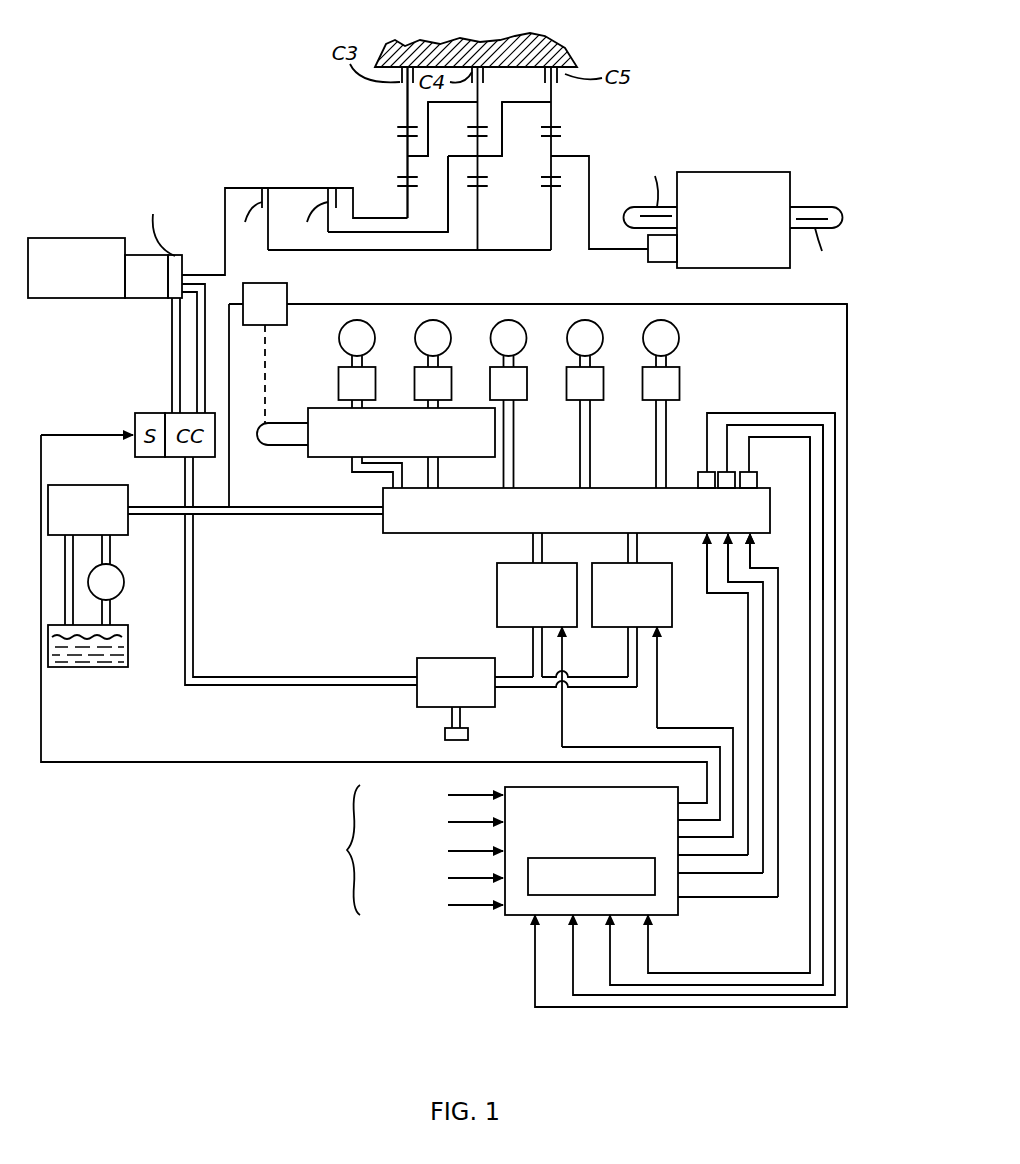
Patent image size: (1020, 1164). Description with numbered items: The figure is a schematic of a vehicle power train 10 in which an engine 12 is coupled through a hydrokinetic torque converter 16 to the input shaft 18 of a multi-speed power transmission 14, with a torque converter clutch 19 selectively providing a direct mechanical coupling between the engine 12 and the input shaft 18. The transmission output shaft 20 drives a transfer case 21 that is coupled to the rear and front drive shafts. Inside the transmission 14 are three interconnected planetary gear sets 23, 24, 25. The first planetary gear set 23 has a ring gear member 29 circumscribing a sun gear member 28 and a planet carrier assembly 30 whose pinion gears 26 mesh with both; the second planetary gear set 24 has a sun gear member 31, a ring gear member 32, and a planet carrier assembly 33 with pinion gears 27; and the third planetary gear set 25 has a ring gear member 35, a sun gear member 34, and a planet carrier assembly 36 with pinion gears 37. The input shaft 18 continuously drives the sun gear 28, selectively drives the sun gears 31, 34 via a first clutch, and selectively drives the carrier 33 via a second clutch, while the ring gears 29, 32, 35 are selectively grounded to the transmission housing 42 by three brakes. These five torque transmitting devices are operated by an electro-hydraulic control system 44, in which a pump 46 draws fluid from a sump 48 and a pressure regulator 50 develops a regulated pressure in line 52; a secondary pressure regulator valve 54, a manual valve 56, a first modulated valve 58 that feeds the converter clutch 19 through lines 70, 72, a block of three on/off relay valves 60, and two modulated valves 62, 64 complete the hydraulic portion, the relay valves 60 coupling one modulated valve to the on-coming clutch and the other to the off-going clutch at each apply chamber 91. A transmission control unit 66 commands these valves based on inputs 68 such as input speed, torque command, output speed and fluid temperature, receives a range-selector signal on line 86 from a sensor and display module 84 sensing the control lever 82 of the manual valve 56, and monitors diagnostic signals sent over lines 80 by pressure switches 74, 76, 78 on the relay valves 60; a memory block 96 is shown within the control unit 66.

The vehicle power train 10 is at (236, 127).
The engine 12 is at (83, 298).
The multi-speed power transmission 14 is at (323, 127).
The hydrokinetic torque converter 16 is at (143, 300).
The transmission input shaft 18 is at (246, 188).
The torque converter clutch 19 is at (186, 272).
The transmission output shaft 20 is at (604, 249).
The transfer case 21 is at (728, 172).
The first planetary gear set 23 is at (415, 162).
The second planetary gear set 24 is at (492, 162).
The third planetary gear set 25 is at (571, 143).
The pinion gears 26 is at (398, 140).
The pinion gears 27 is at (467, 179).
The sun gear member 28 is at (400, 188).
The ring gear member 29 is at (400, 125).
The planet carrier assembly 30 is at (427, 153).
The sun gear member 31 is at (484, 188).
The ring gear member 32 is at (473, 124).
The planet carrier assembly 33 is at (500, 154).
The sun gear member 34 is at (557, 188).
The ring gear member 35 is at (558, 126).
The planet carrier assembly 36 is at (585, 160).
The pinion gears 37 is at (541, 177).
The transmission housing 42 is at (572, 52).
The electro-hydraulic control system 44 is at (877, 354).
The pump 46 is at (123, 577).
The sump 48 is at (128, 650).
The pressure regulator 50 is at (102, 485).
The line 52 is at (278, 516).
The secondary pressure regulator valve 54 is at (417, 695).
The manual valve 56 is at (338, 462).
The first solenoid-operated fluid control valve 58 is at (216, 441).
The relay valves 60 is at (400, 534).
The modulated valve 62 is at (497, 596).
The modulated valve 64 is at (673, 597).
The transmission control unit 66 is at (518, 916).
The inputs 68 is at (405, 850).
The line 70 is at (172, 385).
The line 72 is at (205, 385).
The pressure switch 74 is at (706, 471).
The pressure switch 76 is at (725, 471).
The pressure switch 78 is at (752, 471).
The lines 80 is at (803, 426).
The control lever 82 is at (284, 447).
The sensor and display module 84 is at (287, 298).
The line 86 is at (737, 304).
The apply chamber 91 is at (339, 387).
The non-volatile memory 96 is at (650, 895).